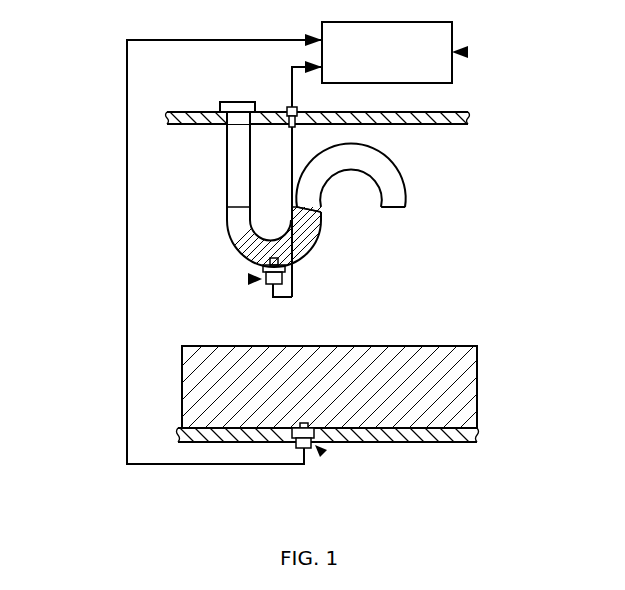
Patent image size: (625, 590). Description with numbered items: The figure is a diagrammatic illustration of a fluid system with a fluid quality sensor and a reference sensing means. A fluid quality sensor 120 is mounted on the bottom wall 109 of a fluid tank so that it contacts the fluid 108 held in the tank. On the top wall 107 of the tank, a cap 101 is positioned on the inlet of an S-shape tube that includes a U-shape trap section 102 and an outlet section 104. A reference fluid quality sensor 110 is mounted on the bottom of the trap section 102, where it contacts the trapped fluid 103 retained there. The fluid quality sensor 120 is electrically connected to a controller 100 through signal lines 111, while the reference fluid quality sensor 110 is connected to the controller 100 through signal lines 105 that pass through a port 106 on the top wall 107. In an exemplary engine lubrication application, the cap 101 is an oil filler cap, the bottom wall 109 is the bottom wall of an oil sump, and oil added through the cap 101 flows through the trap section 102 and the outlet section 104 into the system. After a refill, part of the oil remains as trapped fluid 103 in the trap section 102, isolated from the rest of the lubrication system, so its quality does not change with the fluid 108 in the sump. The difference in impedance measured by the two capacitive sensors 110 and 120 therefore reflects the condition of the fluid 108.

The controller 100 is at (468, 52).
The cap 101 is at (238, 102).
The U shape trap section 102 is at (228, 243).
The trapped fluid 103 is at (315, 235).
The outlet section 104 is at (400, 182).
The signal lines 105 is at (293, 152).
The port 106 is at (289, 107).
The top wall 107 is at (452, 111).
The fluid 108 is at (463, 383).
The bottom wall 109 is at (378, 436).
The reference fluid quality sensor 110 is at (248, 279).
The signal lines 111 is at (127, 72).
The fluid quality sensor 120 is at (323, 453).